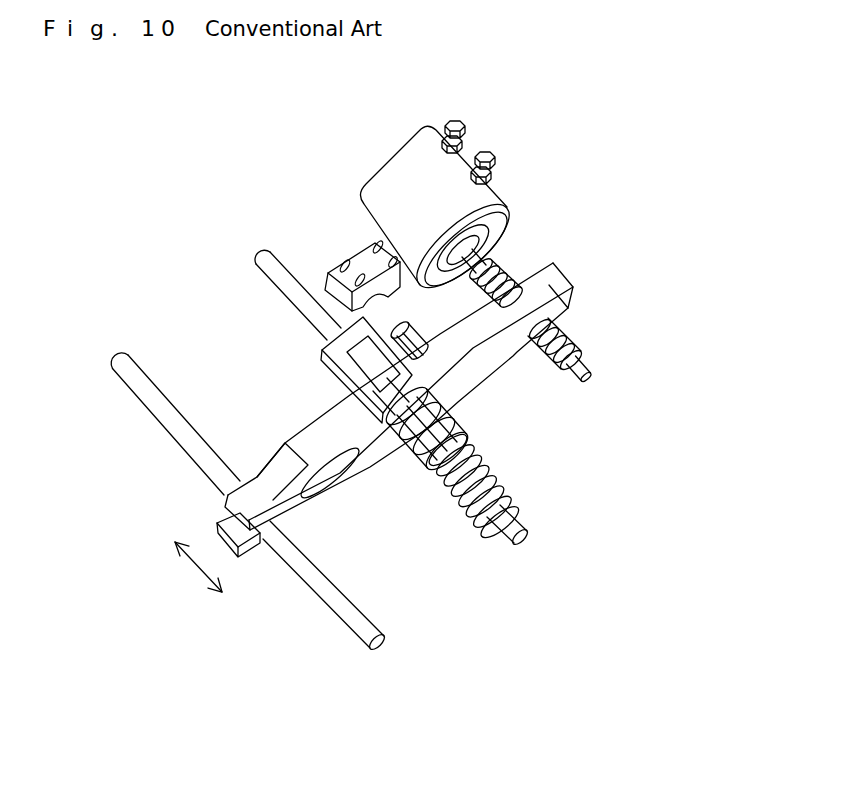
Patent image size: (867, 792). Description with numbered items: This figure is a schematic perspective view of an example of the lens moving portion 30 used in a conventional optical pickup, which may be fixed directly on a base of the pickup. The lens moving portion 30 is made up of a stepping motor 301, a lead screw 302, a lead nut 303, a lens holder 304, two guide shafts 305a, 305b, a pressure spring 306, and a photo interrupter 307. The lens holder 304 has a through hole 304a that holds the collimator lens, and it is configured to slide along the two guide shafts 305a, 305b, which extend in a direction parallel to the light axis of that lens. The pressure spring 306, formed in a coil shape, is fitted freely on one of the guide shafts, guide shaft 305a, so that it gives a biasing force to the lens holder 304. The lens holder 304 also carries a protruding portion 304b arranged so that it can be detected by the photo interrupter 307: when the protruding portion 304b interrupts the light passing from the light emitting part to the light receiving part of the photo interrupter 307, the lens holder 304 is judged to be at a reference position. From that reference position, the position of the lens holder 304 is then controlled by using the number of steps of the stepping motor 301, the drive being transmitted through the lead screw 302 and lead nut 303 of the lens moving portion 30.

The lens moving portion 30 is at (190, 195).
The stepping motor 301 is at (386, 162).
The lead screw 302 is at (578, 350).
The lead nut 303 is at (515, 270).
The lens holder 304 is at (332, 418).
The through hole 304a is at (334, 480).
The protruding portion 304b is at (420, 334).
The guide shaft 305a is at (531, 544).
The guide shaft 305b is at (380, 652).
The pressure spring 306 is at (506, 478).
The photo interrupter 307 is at (372, 245).